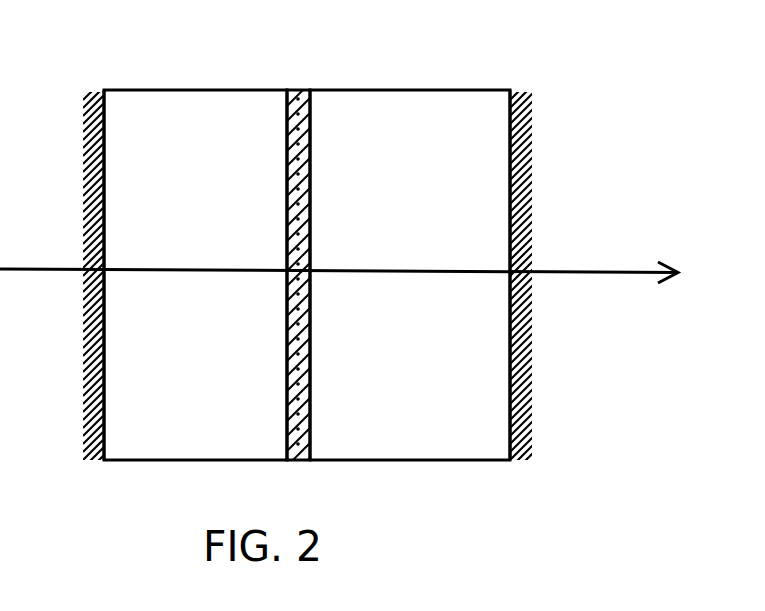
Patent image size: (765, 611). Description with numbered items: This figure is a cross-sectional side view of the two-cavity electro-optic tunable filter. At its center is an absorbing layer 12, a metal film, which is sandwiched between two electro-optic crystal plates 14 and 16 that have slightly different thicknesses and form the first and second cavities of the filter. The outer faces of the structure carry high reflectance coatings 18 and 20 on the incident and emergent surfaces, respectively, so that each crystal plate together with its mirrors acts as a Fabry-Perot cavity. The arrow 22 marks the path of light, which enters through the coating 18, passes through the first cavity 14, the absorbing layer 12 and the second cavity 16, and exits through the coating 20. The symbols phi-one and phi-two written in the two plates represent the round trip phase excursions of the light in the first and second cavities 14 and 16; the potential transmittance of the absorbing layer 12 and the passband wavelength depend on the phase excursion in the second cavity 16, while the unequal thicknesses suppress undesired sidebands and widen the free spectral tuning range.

The absorbing layer 12 is at (291, 91).
The electro-optic crystal plate 14 is at (176, 91).
The electro-optic crystal plate 16 is at (400, 91).
The high reflectance coating 18 is at (87, 91).
The high reflectance coating 20 is at (523, 92).
The arrow 22 is at (578, 272).